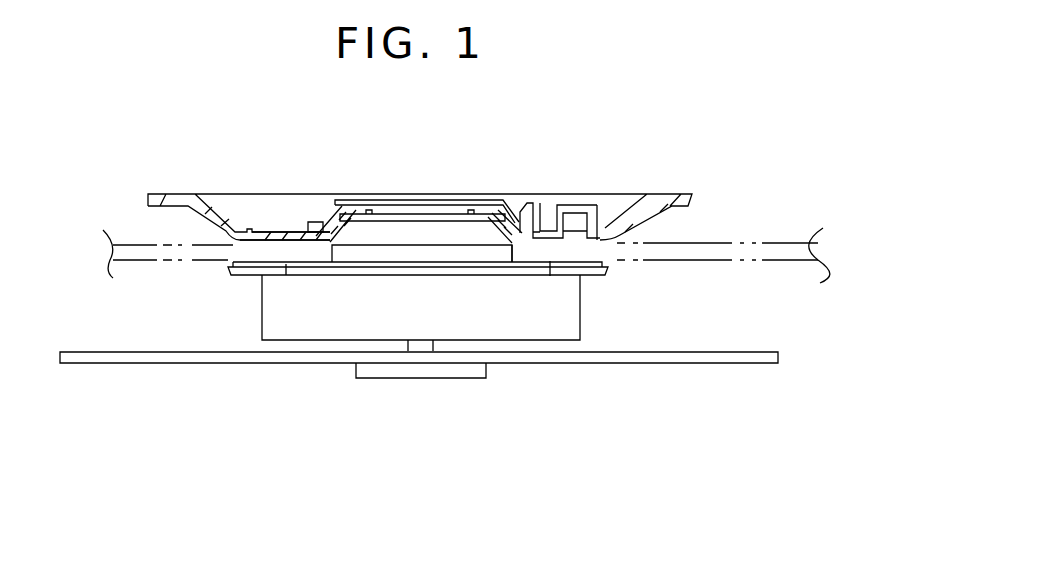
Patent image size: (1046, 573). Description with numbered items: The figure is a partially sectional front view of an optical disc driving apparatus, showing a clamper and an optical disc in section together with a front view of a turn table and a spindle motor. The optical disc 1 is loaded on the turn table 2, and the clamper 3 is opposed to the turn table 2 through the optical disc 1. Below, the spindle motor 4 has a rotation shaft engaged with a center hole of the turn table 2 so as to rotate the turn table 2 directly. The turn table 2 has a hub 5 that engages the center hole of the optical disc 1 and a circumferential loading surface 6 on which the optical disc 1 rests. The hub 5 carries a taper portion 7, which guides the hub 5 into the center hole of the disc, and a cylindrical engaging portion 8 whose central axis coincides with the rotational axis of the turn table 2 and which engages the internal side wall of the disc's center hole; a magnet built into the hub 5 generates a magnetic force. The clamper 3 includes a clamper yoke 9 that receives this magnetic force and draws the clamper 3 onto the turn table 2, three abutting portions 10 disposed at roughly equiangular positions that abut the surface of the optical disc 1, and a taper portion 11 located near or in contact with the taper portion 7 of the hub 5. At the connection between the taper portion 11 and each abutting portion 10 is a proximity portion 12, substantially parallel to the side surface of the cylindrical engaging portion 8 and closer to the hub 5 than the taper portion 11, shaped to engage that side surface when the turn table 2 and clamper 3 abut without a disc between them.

The optical disc 1 is at (140, 245).
The turn table 2 is at (243, 277).
The clamper 3 is at (166, 197).
The spindle motor 4 is at (273, 328).
The hub 5 is at (435, 236).
The circumferential loading surface 6 is at (283, 263).
The taper portion 7 is at (507, 238).
The cylindrical engaging portion 8 is at (530, 213).
The clamper yoke 9 is at (417, 200).
The abutting portions 10 is at (297, 262).
The taper portion 11 is at (338, 205).
The proximity portion 12 is at (320, 205).